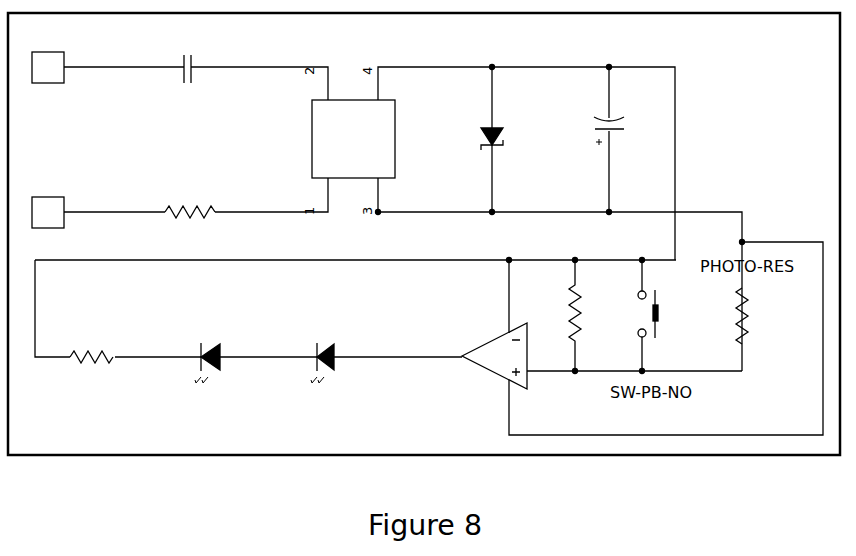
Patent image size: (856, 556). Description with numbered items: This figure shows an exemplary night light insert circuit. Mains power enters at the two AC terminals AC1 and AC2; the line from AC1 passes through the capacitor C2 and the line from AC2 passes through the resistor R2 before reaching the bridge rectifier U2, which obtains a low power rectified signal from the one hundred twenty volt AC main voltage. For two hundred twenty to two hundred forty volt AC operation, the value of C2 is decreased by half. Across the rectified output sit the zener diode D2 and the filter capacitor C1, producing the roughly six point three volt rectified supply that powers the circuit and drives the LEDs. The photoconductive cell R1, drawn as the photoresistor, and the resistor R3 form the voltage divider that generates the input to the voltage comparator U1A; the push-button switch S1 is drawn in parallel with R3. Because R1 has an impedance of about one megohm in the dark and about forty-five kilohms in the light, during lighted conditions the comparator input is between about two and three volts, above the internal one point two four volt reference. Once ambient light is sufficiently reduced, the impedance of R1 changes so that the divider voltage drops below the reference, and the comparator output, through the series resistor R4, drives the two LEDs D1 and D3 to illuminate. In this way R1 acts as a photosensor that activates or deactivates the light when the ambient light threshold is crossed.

The AC input terminal 1 AC1 is at (49, 58).
The AC input terminal 2 AC2 is at (49, 203).
The capacitor C2 is at (188, 58).
The bridge rectifier U2 is at (390, 146).
The zener diode D2 is at (519, 140).
The electrolytic capacitor C1 is at (621, 140).
The resistor R2 is at (188, 201).
The resistor R4 is at (90, 348).
The LED D1 is at (200, 362).
The LED D3 is at (315, 362).
The operational amplifier U1A is at (493, 357).
The voltage divider resistor R3 is at (585, 315).
The push button switch S1 is at (659, 315).
The photoconductive cell R1 is at (752, 316).